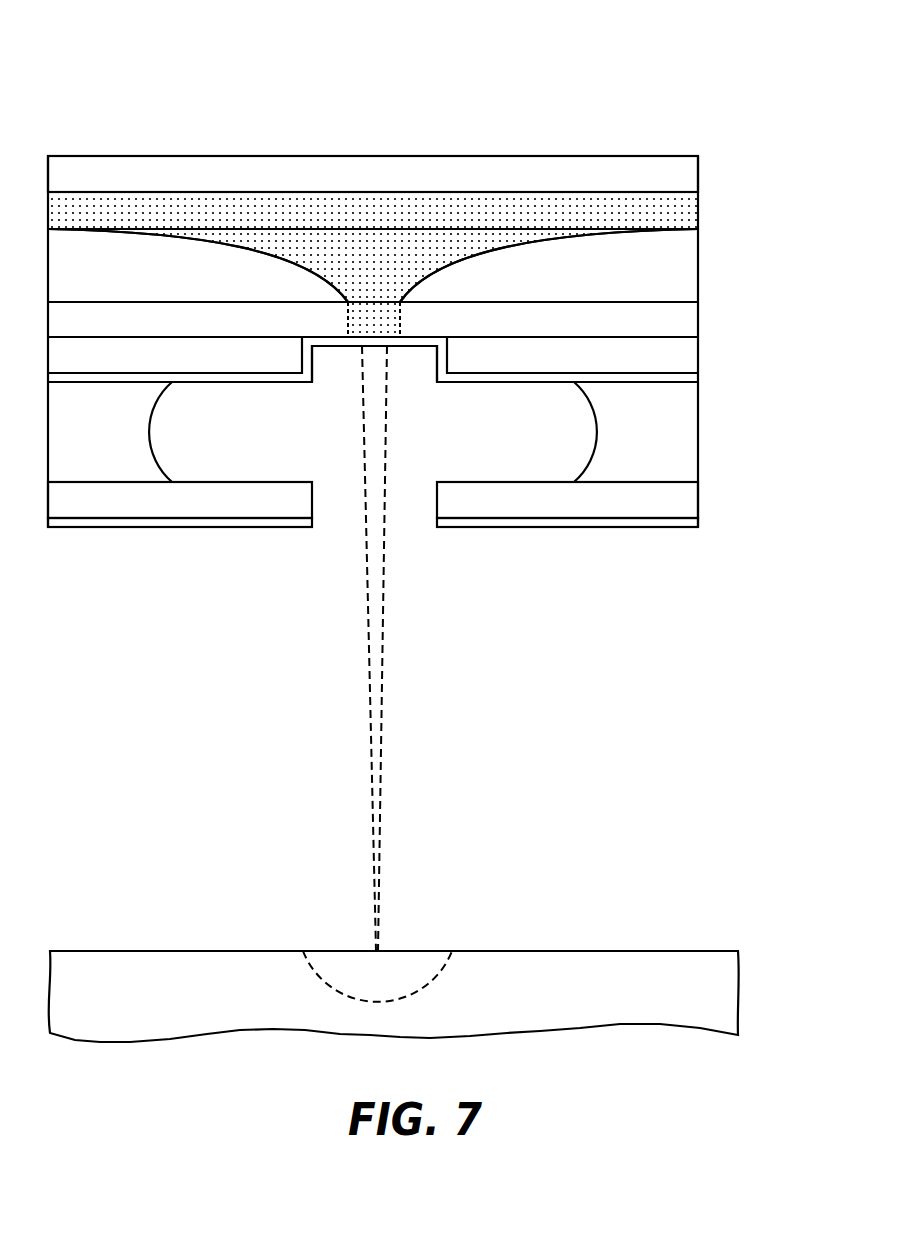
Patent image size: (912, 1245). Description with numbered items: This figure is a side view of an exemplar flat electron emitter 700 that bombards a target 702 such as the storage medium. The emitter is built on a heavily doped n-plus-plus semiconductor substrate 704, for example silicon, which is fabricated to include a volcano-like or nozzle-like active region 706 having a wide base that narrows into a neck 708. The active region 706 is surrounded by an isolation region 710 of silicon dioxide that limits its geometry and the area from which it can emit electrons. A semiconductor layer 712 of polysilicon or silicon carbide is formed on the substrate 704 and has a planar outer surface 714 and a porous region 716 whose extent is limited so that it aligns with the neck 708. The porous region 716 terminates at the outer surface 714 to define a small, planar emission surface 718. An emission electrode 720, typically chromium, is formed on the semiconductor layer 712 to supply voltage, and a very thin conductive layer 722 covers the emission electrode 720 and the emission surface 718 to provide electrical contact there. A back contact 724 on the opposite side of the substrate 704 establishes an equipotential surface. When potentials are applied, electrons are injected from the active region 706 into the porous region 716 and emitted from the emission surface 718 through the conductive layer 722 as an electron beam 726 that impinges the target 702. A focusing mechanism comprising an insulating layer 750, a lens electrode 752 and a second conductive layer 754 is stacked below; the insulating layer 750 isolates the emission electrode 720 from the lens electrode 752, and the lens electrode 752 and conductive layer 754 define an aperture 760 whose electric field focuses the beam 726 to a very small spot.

The flat electron emitter 700 is at (730, 88).
The target 702 is at (503, 951).
The semiconductor substrate 704 is at (698, 255).
The active region 706 is at (399, 243).
The neck 708 is at (383, 287).
The isolation region 710 is at (179, 282).
The semiconductor layer 712 is at (698, 312).
The planar outer surface 714 is at (233, 338).
The porous region 716 is at (383, 324).
The emission surface 718 is at (357, 342).
The emission electrode 720 is at (698, 363).
The conductive layer 722 is at (600, 373).
The back contact 724 is at (698, 173).
The electron beam 726 is at (383, 689).
The insulating layer 750 is at (137, 432).
The lens electrode 752 is at (195, 500).
The second conductive layer 754 is at (100, 523).
The aperture 760 is at (343, 535).